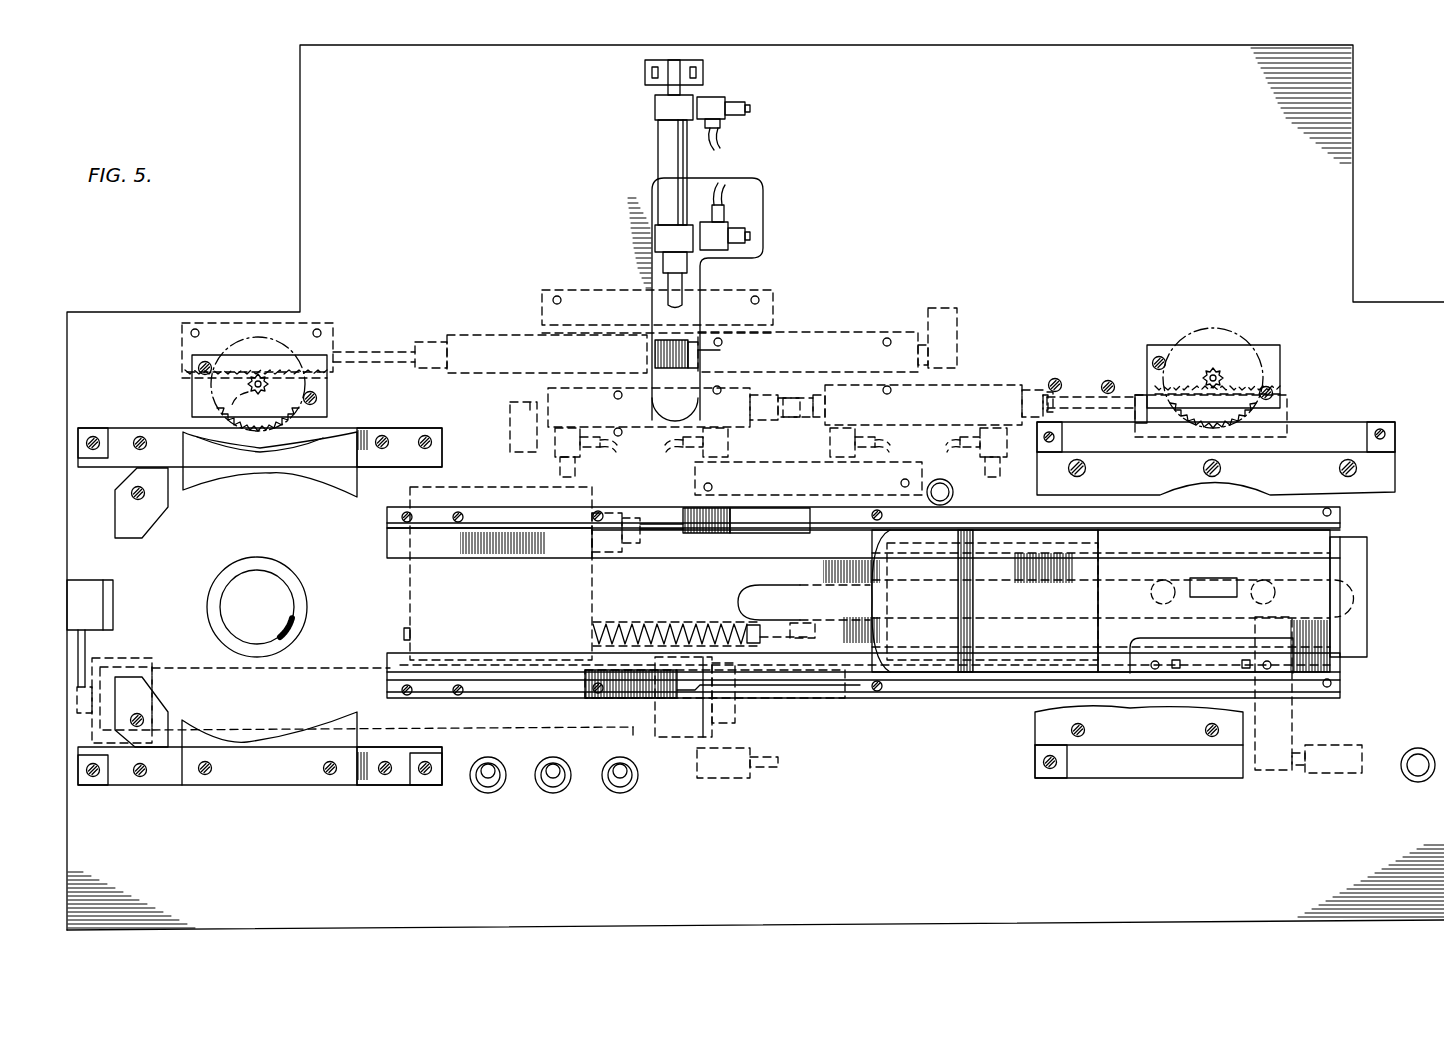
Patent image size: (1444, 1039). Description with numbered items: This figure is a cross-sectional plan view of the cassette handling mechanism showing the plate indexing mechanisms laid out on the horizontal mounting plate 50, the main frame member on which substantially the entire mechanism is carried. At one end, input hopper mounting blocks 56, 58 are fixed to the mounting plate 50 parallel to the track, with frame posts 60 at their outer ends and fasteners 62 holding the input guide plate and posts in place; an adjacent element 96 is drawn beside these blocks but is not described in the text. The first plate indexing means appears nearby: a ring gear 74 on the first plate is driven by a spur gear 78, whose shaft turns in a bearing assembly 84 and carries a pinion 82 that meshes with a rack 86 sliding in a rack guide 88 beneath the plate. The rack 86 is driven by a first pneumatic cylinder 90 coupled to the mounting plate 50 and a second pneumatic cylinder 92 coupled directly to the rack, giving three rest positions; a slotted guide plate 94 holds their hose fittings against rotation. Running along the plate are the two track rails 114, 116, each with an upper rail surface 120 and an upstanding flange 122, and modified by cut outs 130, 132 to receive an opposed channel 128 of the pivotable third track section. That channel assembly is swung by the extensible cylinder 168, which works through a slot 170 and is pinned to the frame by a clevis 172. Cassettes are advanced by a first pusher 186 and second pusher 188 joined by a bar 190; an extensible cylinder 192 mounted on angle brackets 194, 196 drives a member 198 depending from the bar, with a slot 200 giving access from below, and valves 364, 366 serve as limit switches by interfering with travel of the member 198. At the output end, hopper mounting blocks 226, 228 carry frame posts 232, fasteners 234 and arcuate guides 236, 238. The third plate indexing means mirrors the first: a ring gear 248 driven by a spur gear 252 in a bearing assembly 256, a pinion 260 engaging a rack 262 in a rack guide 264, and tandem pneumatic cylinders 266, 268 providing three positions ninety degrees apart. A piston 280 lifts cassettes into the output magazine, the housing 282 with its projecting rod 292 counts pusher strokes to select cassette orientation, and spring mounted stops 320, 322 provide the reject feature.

The mounting plate 50 is at (1337, 232).
The input hopper mounting block 56 is at (1343, 422).
The input hopper mounting block 58 is at (1090, 760).
The frame post 60 is at (1395, 435).
The fastener 62 is at (1383, 428).
The ring gear 74 is at (1275, 440).
The spur gear 78 is at (1213, 328).
The pinion 82 is at (1208, 368).
The bearing assembly 84 is at (1275, 355).
The rack 86 is at (1140, 395).
The rack guide 88 is at (1287, 405).
The first pneumatic cylinder 90 is at (740, 430).
The second pneumatic cylinder 92 is at (1000, 382).
The slotted guide plate 94 is at (930, 468).
The support plate 96 is at (1380, 470).
The rail 114 is at (453, 542).
The rail 116 is at (500, 690).
The upper rail surface 120 is at (553, 545).
The upstanding flange 122 is at (630, 512).
The opposed channel 128 is at (905, 500).
The cut out 130 is at (852, 690).
The cut out 132 is at (693, 535).
The extensible cylinder 168 is at (690, 168).
The slot 170 is at (760, 200).
The clevis 172 is at (703, 78).
The first pusher 186 is at (1360, 565).
The second pusher 188 is at (965, 668).
The bar 190 is at (1000, 645).
The extensible cylinder 192 is at (633, 727).
The angle bracket 194 is at (115, 655).
The angle bracket 196 is at (690, 738).
The member 198 is at (1272, 770).
The slot 200 is at (745, 588).
The hopper mounting block 226 is at (370, 428).
The hopper mounting block 228 is at (365, 782).
The frame post 232 is at (442, 772).
The fastener 234 is at (427, 780).
The guide 236 is at (312, 460).
The guide 238 is at (242, 770).
The ring gear 248 is at (245, 453).
The spur gear 252 is at (280, 345).
The bearing assembly 256 is at (327, 395).
The pinion 260 is at (254, 398).
The rack 262 is at (182, 375).
The rack guide 264 is at (182, 334).
The pneumatic cylinder 266 is at (845, 328).
The pneumatic cylinder 268 is at (485, 330).
The piston 280 is at (292, 575).
The housing 282 is at (410, 600).
The rod 292 is at (790, 620).
The spring mounted stop 320 is at (150, 510).
The spring mounted stop 322 is at (160, 700).
The valve 364 is at (765, 767).
The valve 366 is at (1340, 745).